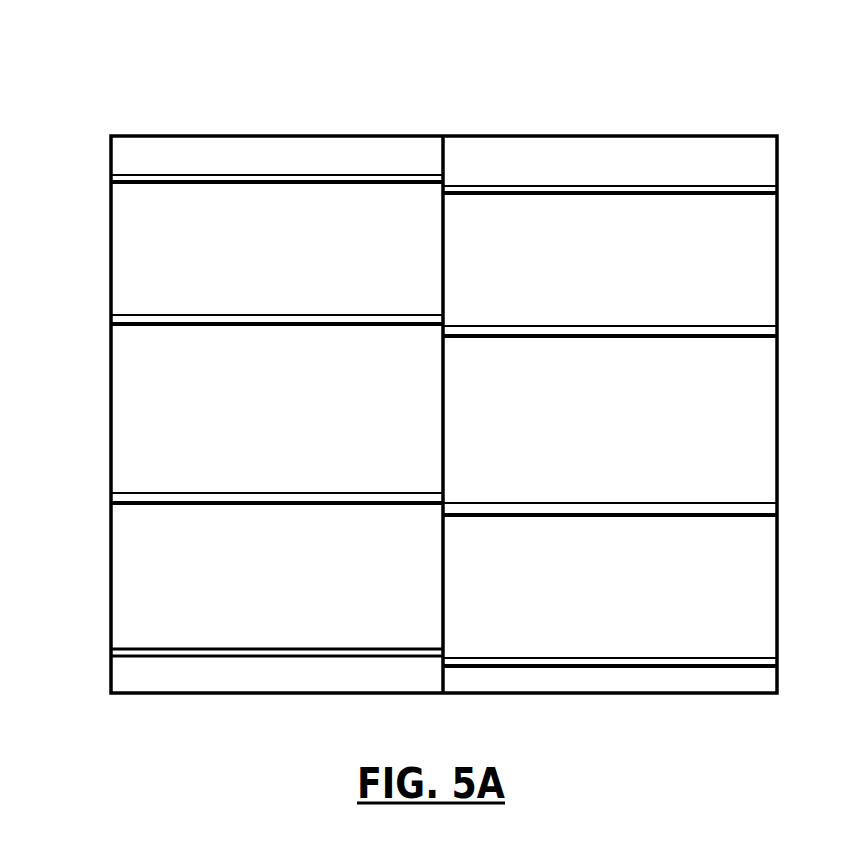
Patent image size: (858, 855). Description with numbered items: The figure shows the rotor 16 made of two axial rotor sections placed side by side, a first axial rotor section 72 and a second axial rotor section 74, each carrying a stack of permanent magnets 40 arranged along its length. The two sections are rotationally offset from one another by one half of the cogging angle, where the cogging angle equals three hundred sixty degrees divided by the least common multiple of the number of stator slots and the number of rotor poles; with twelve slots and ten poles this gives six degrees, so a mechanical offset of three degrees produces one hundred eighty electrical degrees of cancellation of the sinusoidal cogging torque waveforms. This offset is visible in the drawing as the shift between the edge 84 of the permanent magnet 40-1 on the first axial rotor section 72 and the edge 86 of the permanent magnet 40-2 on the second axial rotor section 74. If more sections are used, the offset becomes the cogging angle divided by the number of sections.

The rotor 16 is at (235, 83).
The permanent magnet 40 is at (358, 171).
The permanent magnet 40-1 is at (330, 392).
The permanent magnet 40-2 is at (708, 392).
The first axial rotor section 72 is at (277, 137).
The second axial rotor section 74 is at (610, 137).
The edge 84 is at (338, 328).
The edge 86 is at (610, 338).